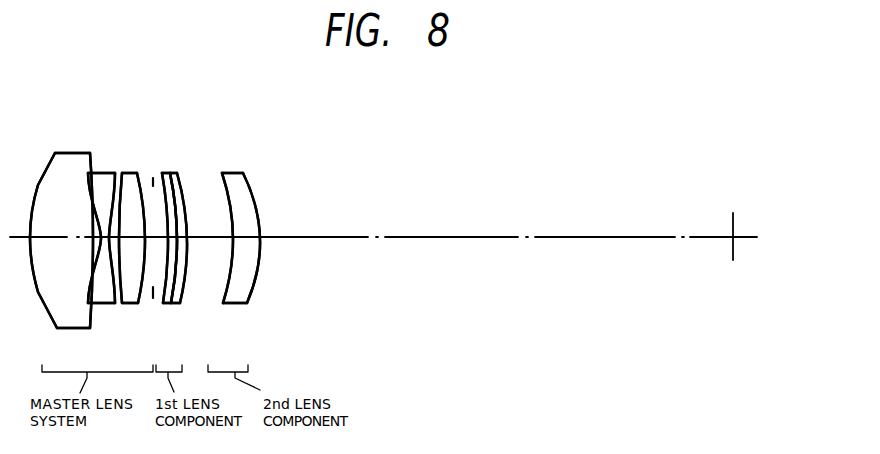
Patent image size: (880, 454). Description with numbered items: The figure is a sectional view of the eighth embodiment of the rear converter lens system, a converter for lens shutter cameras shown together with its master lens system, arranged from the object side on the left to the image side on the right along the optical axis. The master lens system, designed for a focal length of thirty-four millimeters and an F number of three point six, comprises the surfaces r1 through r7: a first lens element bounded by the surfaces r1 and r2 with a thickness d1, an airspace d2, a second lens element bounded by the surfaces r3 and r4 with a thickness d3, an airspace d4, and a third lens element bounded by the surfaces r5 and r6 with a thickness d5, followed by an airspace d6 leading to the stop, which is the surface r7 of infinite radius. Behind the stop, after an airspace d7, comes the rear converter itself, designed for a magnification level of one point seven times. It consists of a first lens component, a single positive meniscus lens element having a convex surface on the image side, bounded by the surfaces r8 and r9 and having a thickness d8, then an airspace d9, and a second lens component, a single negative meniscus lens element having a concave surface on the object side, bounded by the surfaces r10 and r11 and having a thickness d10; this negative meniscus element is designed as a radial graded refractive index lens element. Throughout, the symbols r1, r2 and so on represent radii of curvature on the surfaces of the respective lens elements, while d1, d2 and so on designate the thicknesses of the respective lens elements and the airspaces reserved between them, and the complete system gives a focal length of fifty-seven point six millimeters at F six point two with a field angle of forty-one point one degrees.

The radius of curvature of first surface r1 is at (43, 166).
The radius of curvature of second surface r2 is at (88, 184).
The radius of curvature of third surface r3 is at (96, 174).
The radius of curvature of fourth surface r4 is at (106, 180).
The radius of curvature of fifth surface r5 is at (122, 182).
The radius of curvature of sixth surface r6 is at (136, 176).
The stop surface r7 is at (160, 177).
The radius of curvature of eighth surface r8 is at (170, 178).
The radius of curvature of ninth surface r9 is at (182, 180).
The radius of curvature of tenth surface r10 is at (220, 183).
The radius of curvature of eleventh surface r11 is at (255, 183).
The thickness of first lens element d1 is at (50, 240).
The airspace between first and second lens elements d2 is at (94, 240).
The thickness of second lens element d3 is at (102, 306).
The airspace between second and third lens elements d4 is at (112, 230).
The thickness of third lens element d5 is at (130, 306).
The airspace between third lens element and stop d6 is at (148, 288).
The airspace between stop and first lens component d7 is at (167, 236).
The thickness of first lens component d8 is at (180, 243).
The airspace between first and second lens components d9 is at (204, 242).
The thickness of second lens component d10 is at (252, 240).